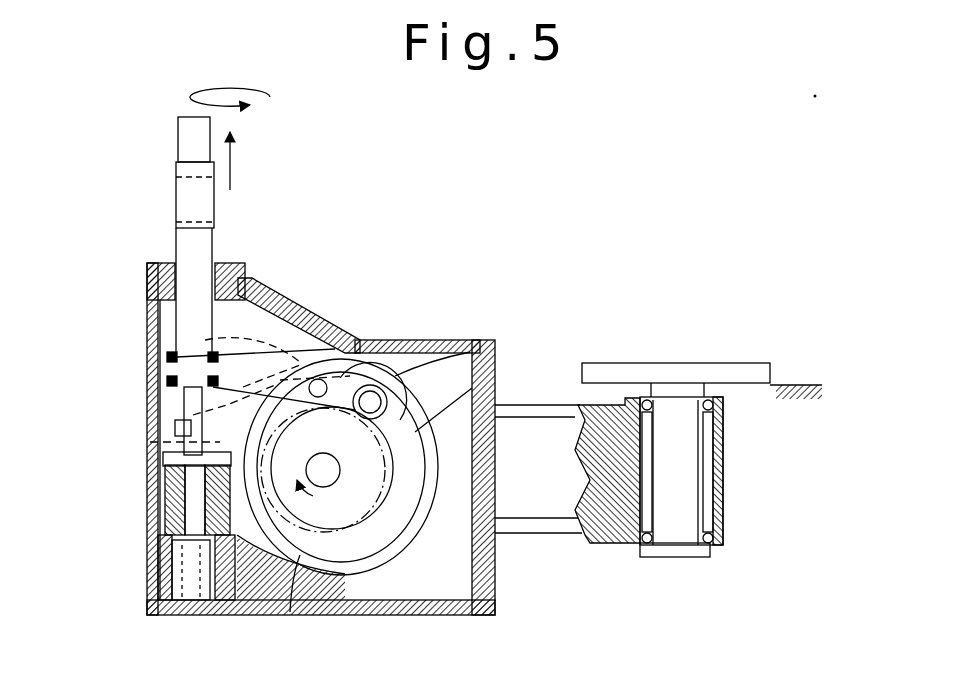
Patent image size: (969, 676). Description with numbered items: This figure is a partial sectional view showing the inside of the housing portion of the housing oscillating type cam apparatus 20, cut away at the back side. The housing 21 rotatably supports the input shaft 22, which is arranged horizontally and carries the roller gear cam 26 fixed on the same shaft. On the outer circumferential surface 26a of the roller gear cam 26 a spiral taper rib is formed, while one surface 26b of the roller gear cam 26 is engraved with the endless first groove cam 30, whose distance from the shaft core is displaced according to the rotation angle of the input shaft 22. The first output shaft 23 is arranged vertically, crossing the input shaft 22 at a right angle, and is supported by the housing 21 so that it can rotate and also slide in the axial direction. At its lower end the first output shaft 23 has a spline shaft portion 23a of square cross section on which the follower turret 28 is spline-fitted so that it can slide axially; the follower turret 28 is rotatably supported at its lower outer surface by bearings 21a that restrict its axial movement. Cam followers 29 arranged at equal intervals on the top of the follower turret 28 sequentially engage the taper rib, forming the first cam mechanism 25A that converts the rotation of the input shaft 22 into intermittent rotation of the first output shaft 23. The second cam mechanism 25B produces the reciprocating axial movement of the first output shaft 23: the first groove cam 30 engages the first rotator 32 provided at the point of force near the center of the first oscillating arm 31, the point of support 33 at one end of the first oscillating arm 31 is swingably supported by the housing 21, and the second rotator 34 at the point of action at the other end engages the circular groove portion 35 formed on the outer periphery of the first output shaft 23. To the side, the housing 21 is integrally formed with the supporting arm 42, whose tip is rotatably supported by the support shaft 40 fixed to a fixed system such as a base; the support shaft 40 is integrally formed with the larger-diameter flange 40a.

The housing oscillating type cam apparatus 20 is at (432, 222).
The housing 21 is at (415, 340).
The bearings 21a is at (152, 545).
The input shaft 22 is at (345, 495).
The first output shaft 23 is at (190, 138).
The spline shaft portion 23a is at (152, 520).
The first cam mechanism 25A is at (150, 503).
The second cam mechanism 25B is at (293, 356).
The roller gear cam 26 is at (497, 382).
The outer circumferential surface 26a is at (497, 342).
The one surface of the roller gear cam 26b is at (298, 612).
The follower turret 28 is at (152, 483).
The cam followers 29 is at (152, 456).
The first groove cam 30 is at (332, 478).
The first oscillating arm 31 is at (217, 457).
The first rotator 32 is at (330, 352).
The point of support 33 is at (386, 388).
The second rotator 34 is at (167, 355).
The circular groove portion 35 is at (167, 379).
The support shaft 40 is at (685, 468).
The flange 40a is at (725, 378).
The supporting arm 42 is at (528, 505).